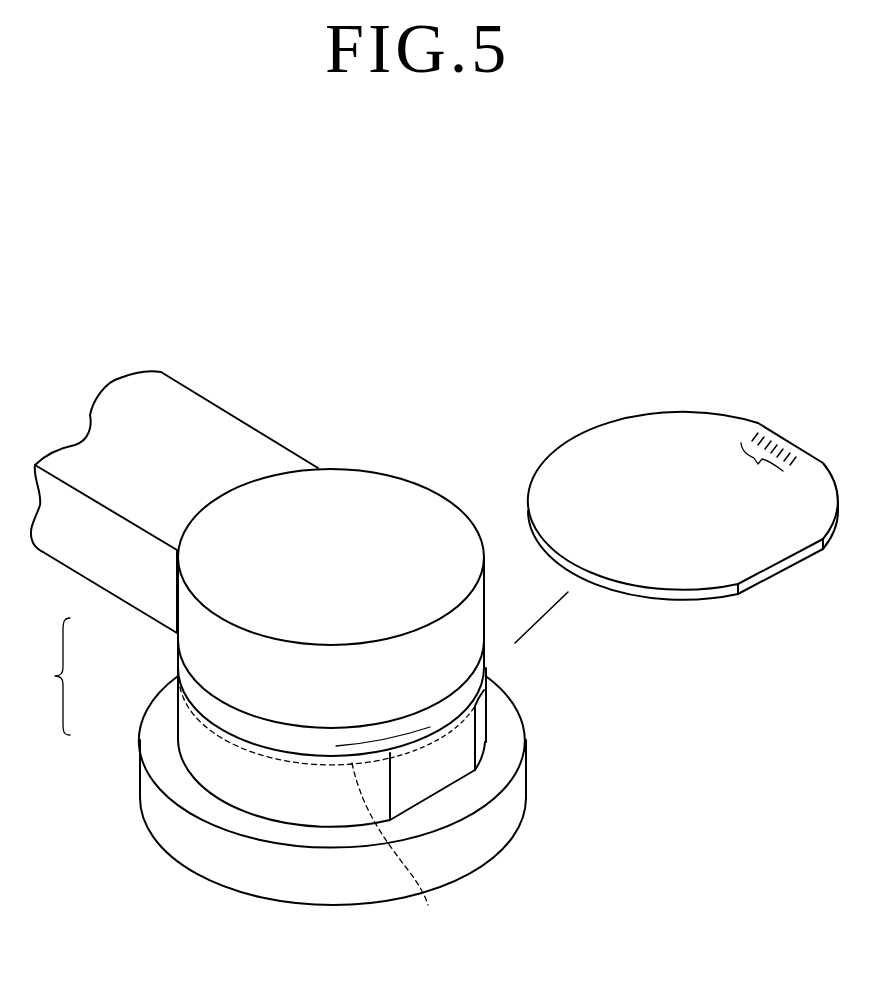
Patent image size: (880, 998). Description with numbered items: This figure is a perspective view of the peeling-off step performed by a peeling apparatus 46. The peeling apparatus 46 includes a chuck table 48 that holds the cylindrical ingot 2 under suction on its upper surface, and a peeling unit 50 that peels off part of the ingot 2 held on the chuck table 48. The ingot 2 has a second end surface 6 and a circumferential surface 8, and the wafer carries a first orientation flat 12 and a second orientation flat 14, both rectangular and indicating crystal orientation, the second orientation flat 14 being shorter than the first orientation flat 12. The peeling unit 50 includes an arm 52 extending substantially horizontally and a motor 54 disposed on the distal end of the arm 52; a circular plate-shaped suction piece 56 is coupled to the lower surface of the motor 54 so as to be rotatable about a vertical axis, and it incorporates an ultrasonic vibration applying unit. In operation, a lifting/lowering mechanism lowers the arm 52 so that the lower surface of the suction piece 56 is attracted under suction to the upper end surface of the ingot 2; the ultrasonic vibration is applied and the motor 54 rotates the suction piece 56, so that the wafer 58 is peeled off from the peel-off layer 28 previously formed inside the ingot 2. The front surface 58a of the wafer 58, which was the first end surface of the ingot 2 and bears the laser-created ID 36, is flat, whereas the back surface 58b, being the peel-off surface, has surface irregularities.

The ingot 2 is at (495, 734).
The second end surface 6 is at (277, 817).
The circumferential surface 8 is at (312, 800).
The first orientation flat 12 is at (773, 570).
The second orientation flat 14 is at (784, 438).
The peel-off layer 28 is at (397, 849).
The ID 36 is at (756, 464).
The peeling apparatus 46 is at (50, 676).
The chuck table 48 is at (167, 750).
The peeling unit 50 is at (132, 608).
The arm 52 is at (203, 410).
The motor 54 is at (395, 490).
The suction piece 56 is at (480, 686).
The wafer 58 is at (608, 415).
The front surface 58a is at (562, 462).
The back surface 58b is at (670, 602).